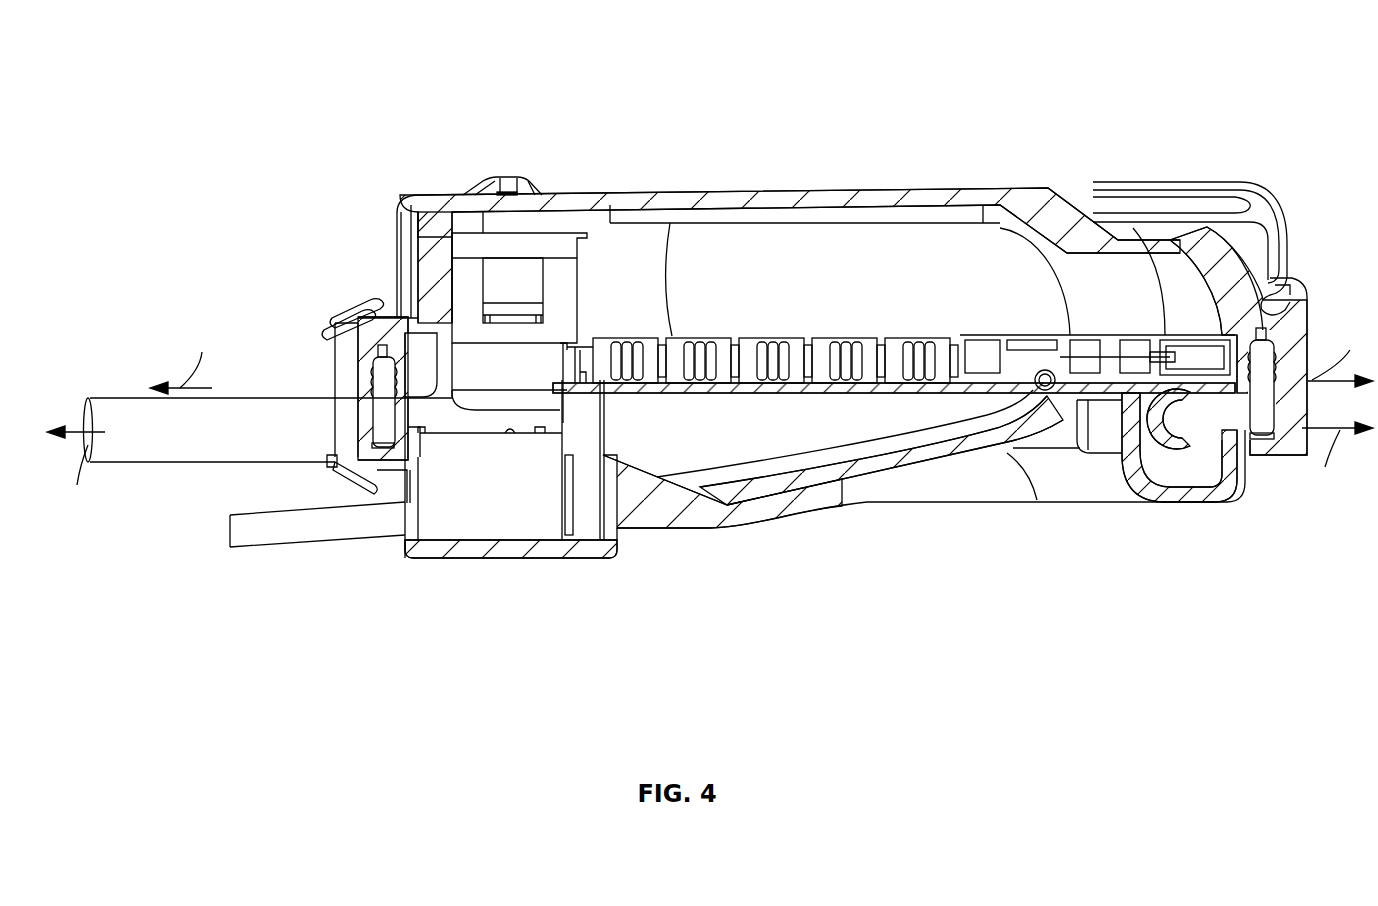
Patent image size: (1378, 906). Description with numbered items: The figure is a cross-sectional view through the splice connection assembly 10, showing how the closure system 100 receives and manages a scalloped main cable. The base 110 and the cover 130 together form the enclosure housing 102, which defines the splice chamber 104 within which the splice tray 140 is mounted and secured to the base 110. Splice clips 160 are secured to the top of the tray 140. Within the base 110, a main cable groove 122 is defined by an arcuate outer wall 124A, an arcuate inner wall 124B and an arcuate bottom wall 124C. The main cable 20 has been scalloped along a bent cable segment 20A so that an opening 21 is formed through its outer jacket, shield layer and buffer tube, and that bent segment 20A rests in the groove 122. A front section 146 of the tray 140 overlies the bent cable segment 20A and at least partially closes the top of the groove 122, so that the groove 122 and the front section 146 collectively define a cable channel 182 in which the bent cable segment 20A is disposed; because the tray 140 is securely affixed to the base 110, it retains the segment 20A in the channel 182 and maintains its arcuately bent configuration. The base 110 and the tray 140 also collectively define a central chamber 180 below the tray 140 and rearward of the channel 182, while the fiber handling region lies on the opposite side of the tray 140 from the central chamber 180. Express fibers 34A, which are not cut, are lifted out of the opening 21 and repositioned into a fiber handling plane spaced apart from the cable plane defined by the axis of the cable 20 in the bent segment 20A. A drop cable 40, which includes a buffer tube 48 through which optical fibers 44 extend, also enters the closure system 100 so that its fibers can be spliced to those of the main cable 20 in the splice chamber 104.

The splice connection assembly 10 is at (356, 88).
The closure system 100 is at (777, 170).
The enclosure housing 102 is at (926, 178).
The splice chamber 104 is at (855, 287).
The base 110 is at (478, 548).
The cover 130 is at (572, 206).
The splice tray 140 is at (714, 390).
The splice clips 160 is at (745, 340).
The central chamber 180 is at (802, 441).
The front section 146 is at (1165, 332).
The optical fibers 44 is at (1035, 372).
The express fibers 34A is at (1148, 356).
The buffer tube 48 is at (878, 462).
The main cable 20 is at (143, 458).
The bent cable segment 20A is at (1168, 470).
The opening 21 is at (1245, 455).
The drop cable 40 is at (325, 530).
The main cable groove 122 is at (1190, 455).
The arcuate outer wall 124A is at (1160, 413).
The arcuate inner wall 124B is at (1130, 467).
The arcuate bottom wall 124C is at (1183, 478).
The cable channel 182 is at (1207, 441).